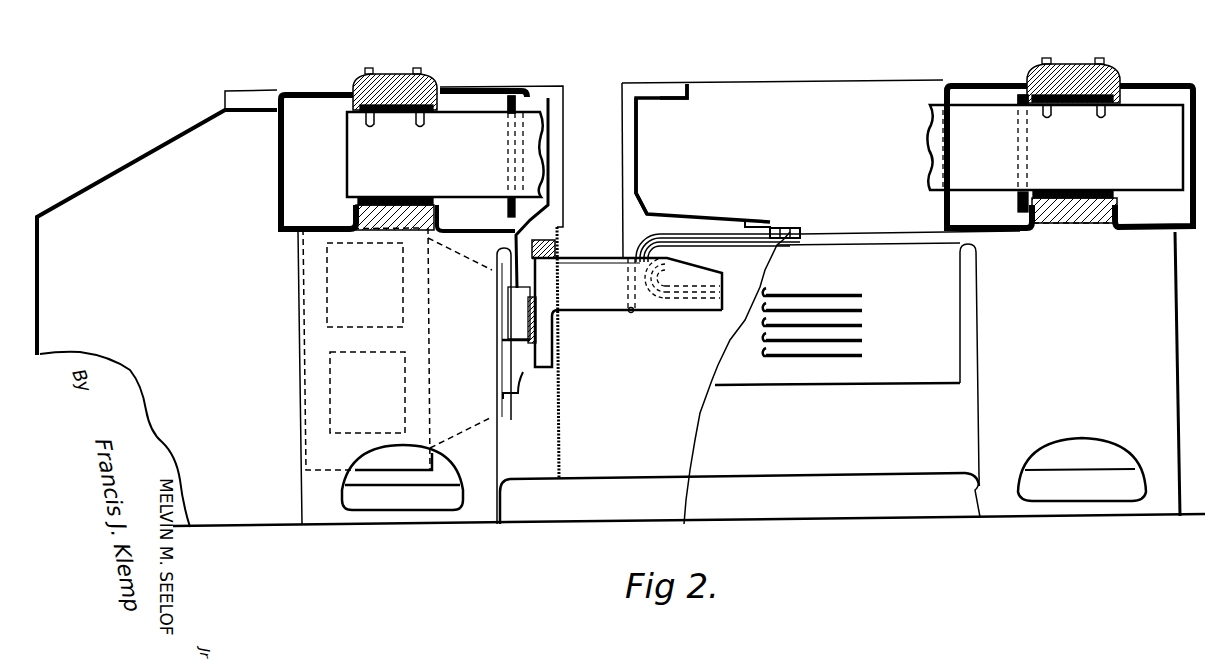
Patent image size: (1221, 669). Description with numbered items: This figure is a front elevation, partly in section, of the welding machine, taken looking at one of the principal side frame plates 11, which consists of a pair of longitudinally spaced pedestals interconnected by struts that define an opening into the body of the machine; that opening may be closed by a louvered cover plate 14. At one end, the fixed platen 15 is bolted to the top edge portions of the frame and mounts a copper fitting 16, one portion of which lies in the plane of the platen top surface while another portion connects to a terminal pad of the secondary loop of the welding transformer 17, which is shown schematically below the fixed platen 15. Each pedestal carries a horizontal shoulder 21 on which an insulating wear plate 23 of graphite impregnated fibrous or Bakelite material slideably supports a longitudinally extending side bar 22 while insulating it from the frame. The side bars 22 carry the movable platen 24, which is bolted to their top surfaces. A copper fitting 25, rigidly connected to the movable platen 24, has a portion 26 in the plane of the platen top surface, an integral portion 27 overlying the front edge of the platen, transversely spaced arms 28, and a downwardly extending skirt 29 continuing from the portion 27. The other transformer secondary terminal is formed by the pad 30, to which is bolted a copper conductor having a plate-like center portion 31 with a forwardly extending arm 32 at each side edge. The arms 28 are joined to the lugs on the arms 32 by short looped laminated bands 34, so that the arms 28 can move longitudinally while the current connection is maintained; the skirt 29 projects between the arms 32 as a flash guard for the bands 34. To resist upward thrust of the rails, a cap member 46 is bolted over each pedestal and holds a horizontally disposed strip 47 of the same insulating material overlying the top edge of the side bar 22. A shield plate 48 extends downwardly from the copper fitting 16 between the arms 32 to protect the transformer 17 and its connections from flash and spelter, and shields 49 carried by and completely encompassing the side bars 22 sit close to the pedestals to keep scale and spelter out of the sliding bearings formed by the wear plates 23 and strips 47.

The side frame plate 11 is at (1165, 343).
The louvered cover plate 14 is at (900, 383).
The fixed platen 15 is at (457, 90).
The copper fitting 16 is at (548, 88).
The welding transformer 17 is at (511, 420).
The horizontal shoulder 21 is at (355, 212).
The side bar 22 is at (350, 140).
The insulating wear plate 23 is at (410, 200).
The movable platen 24 is at (790, 86).
The copper fitting 25 is at (611, 179).
The portion 26 is at (660, 88).
The integral portion 27 is at (628, 194).
The arm 28 is at (745, 225).
The skirt 29 is at (631, 312).
The pad 30 is at (503, 396).
The plate-like center portion 31 is at (545, 337).
The arm 32 is at (665, 296).
The looped laminated band 34 is at (731, 241).
The cap member 46 is at (406, 80).
The strip 47 is at (378, 105).
The shield plate 48 is at (558, 406).
The shield 49 is at (509, 93).